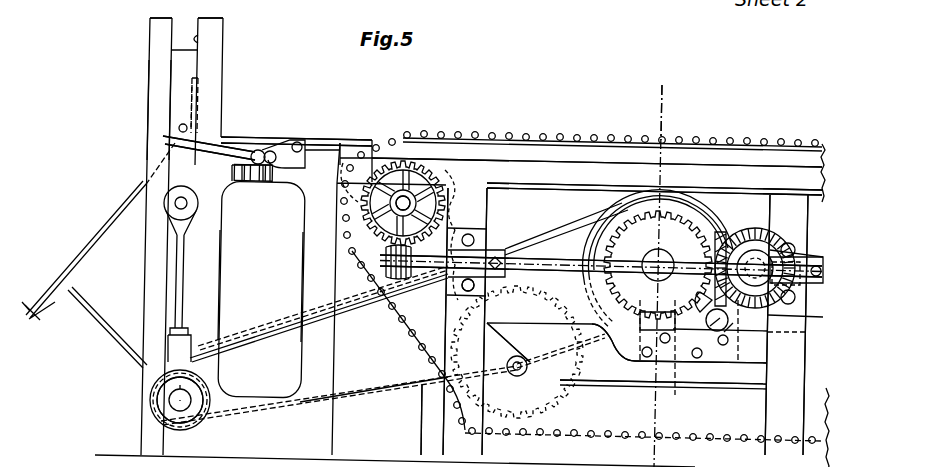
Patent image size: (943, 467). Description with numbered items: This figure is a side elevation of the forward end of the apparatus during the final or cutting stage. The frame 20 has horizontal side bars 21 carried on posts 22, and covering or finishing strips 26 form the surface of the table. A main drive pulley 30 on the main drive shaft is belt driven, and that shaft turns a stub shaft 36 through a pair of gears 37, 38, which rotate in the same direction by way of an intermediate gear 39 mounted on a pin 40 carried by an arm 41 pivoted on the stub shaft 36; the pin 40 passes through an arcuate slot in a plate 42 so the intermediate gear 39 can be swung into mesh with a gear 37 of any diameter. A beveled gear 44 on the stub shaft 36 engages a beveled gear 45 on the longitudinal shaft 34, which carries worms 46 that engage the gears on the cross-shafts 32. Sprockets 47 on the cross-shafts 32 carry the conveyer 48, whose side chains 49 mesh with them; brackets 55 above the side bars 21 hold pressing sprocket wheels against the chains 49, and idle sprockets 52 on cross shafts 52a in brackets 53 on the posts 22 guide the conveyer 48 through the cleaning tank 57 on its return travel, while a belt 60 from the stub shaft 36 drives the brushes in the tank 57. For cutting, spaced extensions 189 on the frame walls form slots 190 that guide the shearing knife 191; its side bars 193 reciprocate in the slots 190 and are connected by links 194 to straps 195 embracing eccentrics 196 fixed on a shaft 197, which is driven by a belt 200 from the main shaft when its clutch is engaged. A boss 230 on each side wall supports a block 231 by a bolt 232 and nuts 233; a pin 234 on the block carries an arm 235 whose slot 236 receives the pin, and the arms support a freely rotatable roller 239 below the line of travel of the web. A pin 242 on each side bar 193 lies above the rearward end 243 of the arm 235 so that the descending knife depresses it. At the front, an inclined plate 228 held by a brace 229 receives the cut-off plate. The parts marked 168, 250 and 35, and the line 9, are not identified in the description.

The extensions 189 is at (165, 17).
The slots 190 is at (203, 42).
The shearing knife 191 is at (196, 108).
The side bars 193 is at (178, 109).
The pin 242 is at (178, 128).
The rearward end 243 is at (167, 153).
The inclined plate 228 is at (117, 240).
The brace 229 is at (113, 339).
The links 194 is at (188, 237).
The straps 195 is at (192, 360).
The eccentrics 196 is at (170, 393).
The shaft 197 is at (172, 420).
The worms 46 is at (383, 352).
The belt 200 is at (405, 386).
The boss 230 is at (238, 188).
The block 231 is at (276, 172).
The bolt 232 is at (258, 181).
The nuts 233 is at (235, 170).
The pin 234 is at (277, 147).
The arm 235 is at (258, 150).
The slot 236 is at (298, 141).
The roller 239 is at (329, 152).
The bar 168 is at (332, 140).
The sprockets 47 is at (387, 139).
The gear 250 is at (452, 163).
The brackets 55 is at (412, 197).
The cross-shafts 32 is at (446, 190).
The side chains 49 is at (533, 139).
The section line 9 is at (680, 118).
The conveyer 48 is at (703, 140).
The frame 20 is at (597, 176).
The side bars 21 is at (547, 187).
The shaft 34 is at (580, 262).
The main drive pulley 30 is at (677, 233).
The covering or finishing strips 26 is at (602, 319).
The gear 37 is at (718, 230).
The beveled gear 44 is at (752, 238).
The beveled gear 45 is at (742, 248).
The stub shaft 36 is at (789, 243).
The bearing 35 is at (803, 256).
The gear 38 is at (797, 297).
The intermediate gear 39 is at (770, 317).
The belt 60 is at (806, 333).
The plate 42 is at (732, 322).
The pin 40 is at (714, 343).
The arm 41 is at (675, 379).
The idle sprockets 52 is at (573, 372).
The cross shafts 52a is at (518, 378).
The brackets 53 is at (508, 351).
The tank 57 is at (419, 412).
The posts 22 is at (444, 434).